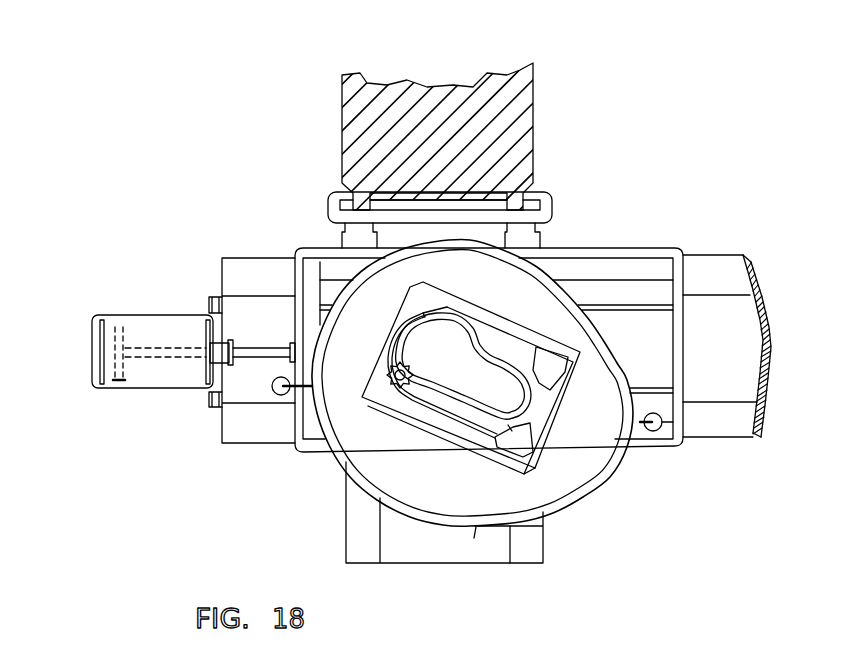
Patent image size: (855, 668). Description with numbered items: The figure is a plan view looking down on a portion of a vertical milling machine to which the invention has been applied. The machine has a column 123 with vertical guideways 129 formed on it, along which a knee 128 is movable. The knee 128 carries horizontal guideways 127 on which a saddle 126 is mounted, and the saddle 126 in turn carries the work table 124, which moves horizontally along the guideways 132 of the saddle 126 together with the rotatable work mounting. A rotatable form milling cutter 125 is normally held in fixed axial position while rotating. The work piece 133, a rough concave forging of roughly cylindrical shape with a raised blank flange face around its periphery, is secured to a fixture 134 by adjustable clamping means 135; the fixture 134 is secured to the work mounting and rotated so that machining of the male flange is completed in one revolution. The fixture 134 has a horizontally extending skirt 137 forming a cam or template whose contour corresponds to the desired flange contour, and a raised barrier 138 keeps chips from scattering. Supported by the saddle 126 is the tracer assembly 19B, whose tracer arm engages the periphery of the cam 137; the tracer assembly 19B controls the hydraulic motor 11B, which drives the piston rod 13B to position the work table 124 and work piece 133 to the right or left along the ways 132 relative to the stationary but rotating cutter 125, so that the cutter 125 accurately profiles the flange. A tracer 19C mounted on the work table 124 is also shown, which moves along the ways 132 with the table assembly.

The column 123 is at (342, 131).
The vertical guideways 129 is at (551, 203).
The work table 124 is at (446, 350).
The hydraulic motor 11B is at (142, 315).
The piston rod 13B is at (248, 347).
The tracer assembly 19B is at (272, 386).
The skirt (cam or template) 137 is at (596, 502).
The raised barrier 138 is at (390, 481).
The fixture 134 is at (553, 428).
The work piece 133 is at (487, 392).
The form milling cutter 125 is at (412, 370).
The adjustable clamping means 135 is at (543, 379).
The saddle 126 is at (727, 346).
The guideways 132 is at (725, 433).
The tracer 19C is at (653, 431).
The knee 128 is at (462, 556).
The horizontal guideways 127 is at (536, 545).